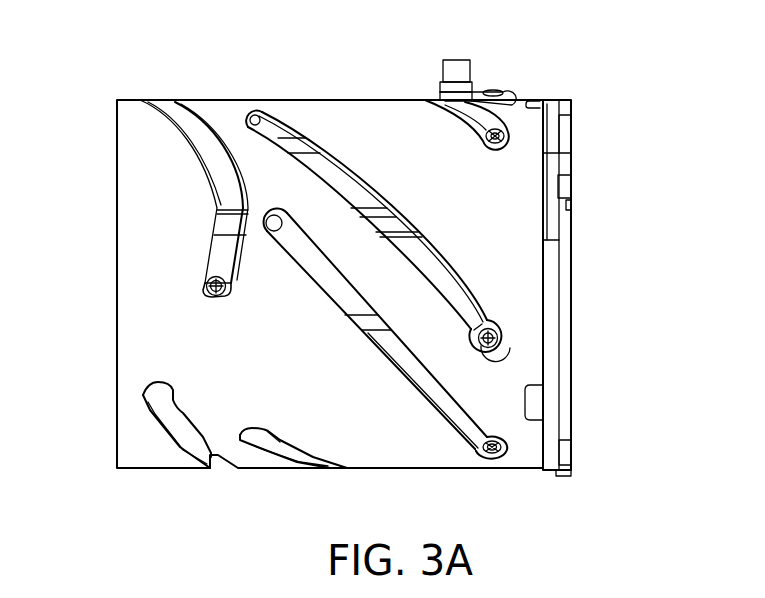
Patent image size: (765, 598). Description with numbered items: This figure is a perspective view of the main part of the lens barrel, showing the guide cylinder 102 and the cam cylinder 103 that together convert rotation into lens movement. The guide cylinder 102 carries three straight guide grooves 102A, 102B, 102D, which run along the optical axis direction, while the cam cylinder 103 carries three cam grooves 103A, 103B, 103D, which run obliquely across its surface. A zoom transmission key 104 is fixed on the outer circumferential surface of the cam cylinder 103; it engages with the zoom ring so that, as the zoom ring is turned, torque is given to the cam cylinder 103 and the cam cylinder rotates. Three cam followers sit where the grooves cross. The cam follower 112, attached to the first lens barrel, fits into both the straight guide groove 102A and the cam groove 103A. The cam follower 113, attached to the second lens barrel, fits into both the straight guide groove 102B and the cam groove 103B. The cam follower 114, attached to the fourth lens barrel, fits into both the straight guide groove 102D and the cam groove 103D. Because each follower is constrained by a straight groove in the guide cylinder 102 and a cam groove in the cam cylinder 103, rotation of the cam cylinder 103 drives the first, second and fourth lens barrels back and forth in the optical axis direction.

The cam cylinder 103 is at (309, 107).
The zoom transmission key 104 is at (467, 60).
The guide cylinder 102 is at (555, 100).
The cam groove 103A is at (233, 252).
The straight guide groove 102A is at (201, 273).
The cam follower 112 is at (184, 295).
The cam groove 103B is at (436, 244).
The straight guide groove 102B is at (478, 327).
The cam follower 113 is at (503, 340).
The cam groove 103D is at (445, 415).
The straight guide groove 102D is at (472, 445).
The cam follower 114 is at (478, 458).